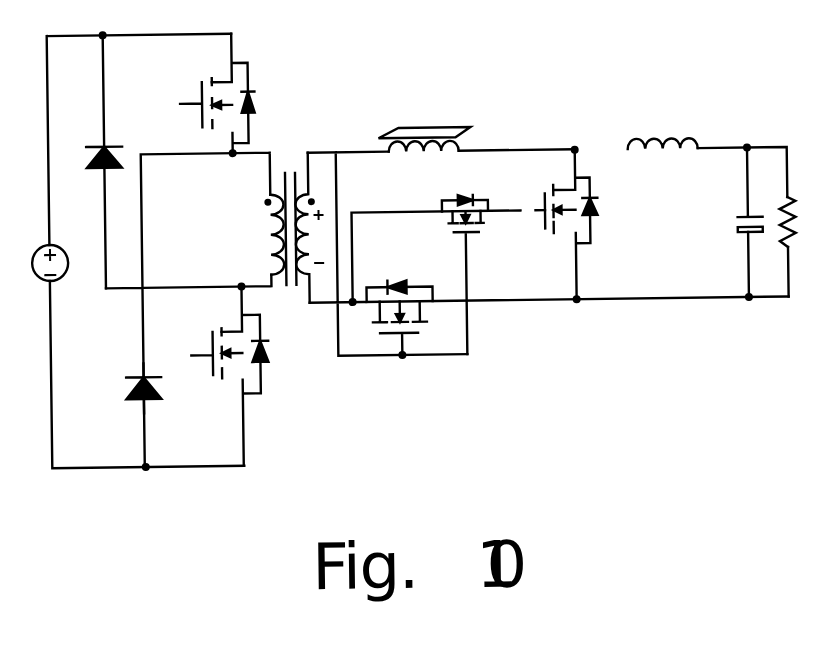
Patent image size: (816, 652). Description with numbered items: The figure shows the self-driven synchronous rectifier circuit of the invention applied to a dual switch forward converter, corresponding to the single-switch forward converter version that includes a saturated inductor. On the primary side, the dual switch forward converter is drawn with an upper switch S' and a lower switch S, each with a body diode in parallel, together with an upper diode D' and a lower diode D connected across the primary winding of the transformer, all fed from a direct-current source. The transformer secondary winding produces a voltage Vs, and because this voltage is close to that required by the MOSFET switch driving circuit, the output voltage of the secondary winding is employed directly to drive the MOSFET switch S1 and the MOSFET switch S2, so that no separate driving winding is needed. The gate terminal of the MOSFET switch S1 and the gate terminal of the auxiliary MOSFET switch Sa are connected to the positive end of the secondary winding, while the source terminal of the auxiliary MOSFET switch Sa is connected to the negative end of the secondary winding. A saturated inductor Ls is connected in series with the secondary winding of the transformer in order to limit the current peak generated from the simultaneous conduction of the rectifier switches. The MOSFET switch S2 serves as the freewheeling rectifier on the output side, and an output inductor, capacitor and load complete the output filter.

The primary-side upper switch (MOSFET with body diode) S' is at (209, 93).
The primary-side upper diode D' is at (97, 162).
The primary-side lower switch (MOSFET with body diode) S is at (219, 376).
The primary-side lower diode D is at (137, 385).
The transformer secondary voltage Vs is at (316, 227).
The saturated inductor Ls is at (424, 120).
The auxiliary MOSFET switch Sa is at (466, 263).
The MOSFET switch S1 is at (397, 312).
The MOSFET switch S2 is at (579, 224).